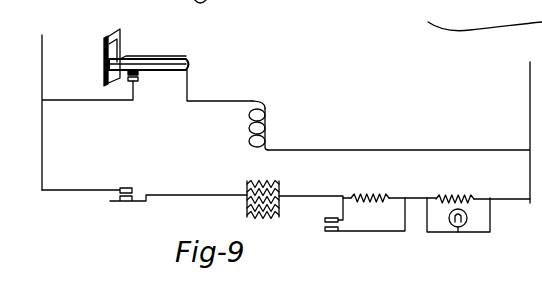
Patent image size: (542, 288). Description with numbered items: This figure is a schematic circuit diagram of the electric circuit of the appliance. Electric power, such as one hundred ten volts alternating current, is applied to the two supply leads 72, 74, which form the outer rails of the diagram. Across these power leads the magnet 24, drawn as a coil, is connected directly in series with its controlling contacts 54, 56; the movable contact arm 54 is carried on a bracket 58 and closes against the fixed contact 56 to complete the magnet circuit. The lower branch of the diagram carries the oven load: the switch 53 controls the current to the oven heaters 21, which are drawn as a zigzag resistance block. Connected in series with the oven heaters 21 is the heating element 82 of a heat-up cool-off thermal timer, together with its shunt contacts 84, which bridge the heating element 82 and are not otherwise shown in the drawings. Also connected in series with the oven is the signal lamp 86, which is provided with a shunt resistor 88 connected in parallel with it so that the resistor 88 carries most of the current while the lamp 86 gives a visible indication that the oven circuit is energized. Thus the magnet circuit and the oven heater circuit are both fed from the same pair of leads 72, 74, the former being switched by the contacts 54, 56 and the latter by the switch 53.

The oven heaters 21 is at (262, 180).
The magnet 24 is at (268, 128).
The switch 53 is at (134, 187).
The controlling contact 54 is at (177, 60).
The controlling contact 56 is at (133, 81).
The bracket 58 is at (118, 42).
The lead 72 is at (42, 50).
The lead 74 is at (530, 105).
The heating element 82 is at (380, 193).
The shunt contacts 84 is at (322, 219).
The signal lamp 86 is at (467, 218).
The shunt resistor 88 is at (467, 196).